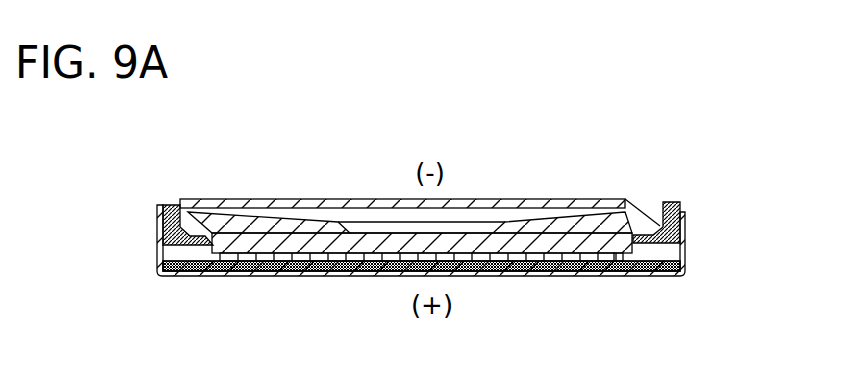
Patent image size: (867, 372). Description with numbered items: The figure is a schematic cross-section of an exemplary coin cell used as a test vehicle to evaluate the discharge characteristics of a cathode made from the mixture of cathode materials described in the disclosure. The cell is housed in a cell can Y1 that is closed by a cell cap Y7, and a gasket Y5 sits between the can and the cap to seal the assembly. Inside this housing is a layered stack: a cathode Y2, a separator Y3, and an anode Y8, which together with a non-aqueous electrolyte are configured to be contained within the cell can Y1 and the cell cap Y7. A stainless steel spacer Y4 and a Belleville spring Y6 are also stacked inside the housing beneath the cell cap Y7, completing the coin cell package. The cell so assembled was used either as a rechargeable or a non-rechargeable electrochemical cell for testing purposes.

The cell can Y1 is at (203, 271).
The cathode Y2 is at (676, 278).
The separator Y3 is at (681, 263).
The stainless steel spacer Y4 is at (219, 247).
The gasket Y5 is at (172, 203).
The Belleville spring Y6 is at (628, 206).
The cell cap Y7 is at (606, 199).
The anode Y8 is at (614, 257).